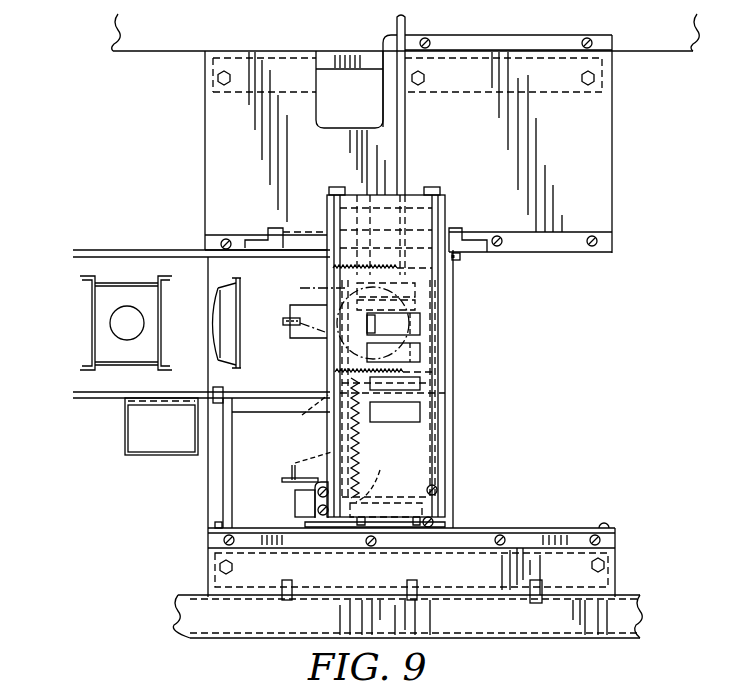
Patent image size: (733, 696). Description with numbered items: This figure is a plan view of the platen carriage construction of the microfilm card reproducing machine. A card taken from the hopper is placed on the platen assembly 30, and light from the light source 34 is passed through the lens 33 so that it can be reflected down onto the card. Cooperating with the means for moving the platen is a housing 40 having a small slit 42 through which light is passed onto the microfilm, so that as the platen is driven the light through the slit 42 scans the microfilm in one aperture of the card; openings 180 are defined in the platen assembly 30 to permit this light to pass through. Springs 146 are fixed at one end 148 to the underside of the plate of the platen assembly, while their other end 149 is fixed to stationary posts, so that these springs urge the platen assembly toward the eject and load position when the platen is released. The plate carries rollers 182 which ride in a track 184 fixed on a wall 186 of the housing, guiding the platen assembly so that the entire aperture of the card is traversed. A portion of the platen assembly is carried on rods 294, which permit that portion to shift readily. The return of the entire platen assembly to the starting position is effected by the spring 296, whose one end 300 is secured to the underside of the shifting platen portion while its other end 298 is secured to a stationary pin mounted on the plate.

The platen 30 is at (462, 421).
The lens 33 is at (222, 318).
The light source 34 is at (115, 321).
The housing 40 is at (311, 288).
The slit 42 is at (432, 306).
The springs 146 is at (332, 358).
The end of spring 148 is at (338, 264).
The other end of spring 149 is at (450, 268).
The openings 180 is at (405, 355).
The rollers 182 is at (415, 528).
The track 184 is at (305, 523).
The wall 186 is at (487, 528).
The rods 294 is at (340, 438).
The spring 296 is at (362, 440).
The other end of spring 298 is at (386, 484).
The one end of spring 300 is at (301, 414).